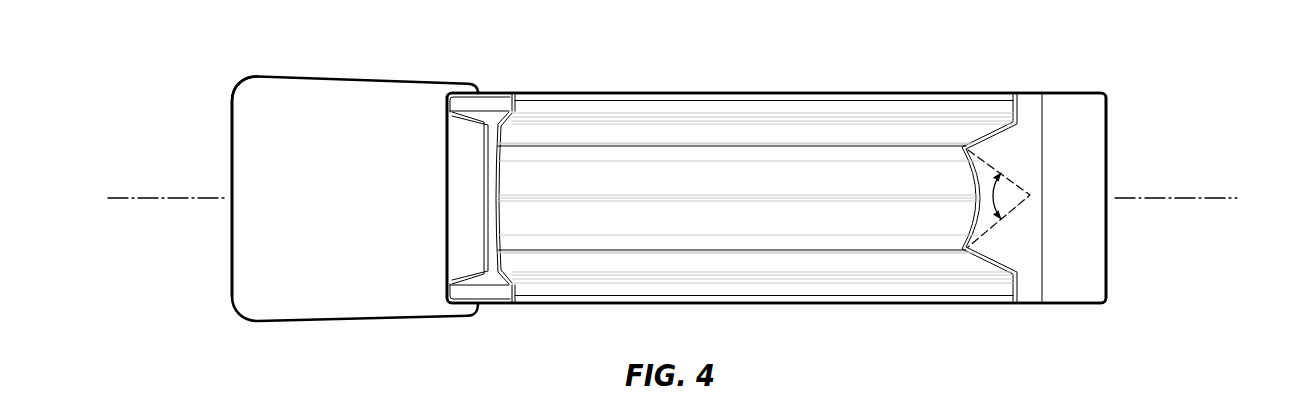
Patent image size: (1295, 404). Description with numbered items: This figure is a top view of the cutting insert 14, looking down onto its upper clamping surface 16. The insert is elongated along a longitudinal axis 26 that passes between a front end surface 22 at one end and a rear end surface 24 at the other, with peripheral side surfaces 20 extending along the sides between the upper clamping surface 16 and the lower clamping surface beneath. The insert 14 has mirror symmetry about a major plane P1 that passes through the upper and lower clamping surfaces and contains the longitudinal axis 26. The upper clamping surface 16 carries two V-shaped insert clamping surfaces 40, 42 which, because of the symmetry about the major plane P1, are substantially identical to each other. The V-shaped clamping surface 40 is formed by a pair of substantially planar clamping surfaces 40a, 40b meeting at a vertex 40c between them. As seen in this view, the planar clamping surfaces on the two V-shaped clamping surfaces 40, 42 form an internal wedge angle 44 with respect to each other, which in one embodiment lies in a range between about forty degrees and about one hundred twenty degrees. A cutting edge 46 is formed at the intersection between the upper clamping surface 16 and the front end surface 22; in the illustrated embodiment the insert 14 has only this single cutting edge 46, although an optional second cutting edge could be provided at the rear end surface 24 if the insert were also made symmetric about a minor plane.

The cutting insert 14 is at (1078, 68).
The upper clamping surface 16 is at (845, 256).
The peripheral side surfaces 20 is at (767, 311).
The front end surface 22 is at (222, 255).
The rear end surface 24 is at (1113, 240).
The longitudinal axis 26 is at (147, 197).
The V-shaped insert clamping surface 40 is at (864, 145).
The clamping surface 40a is at (784, 135).
The clamping surface 40b is at (654, 157).
The vertex 40c is at (719, 147).
The V-shaped insert clamping surface 42 is at (615, 256).
The internal wedge angle 44 is at (993, 205).
The cutting edge 46 is at (231, 153).
The major plane P1 is at (1217, 197).